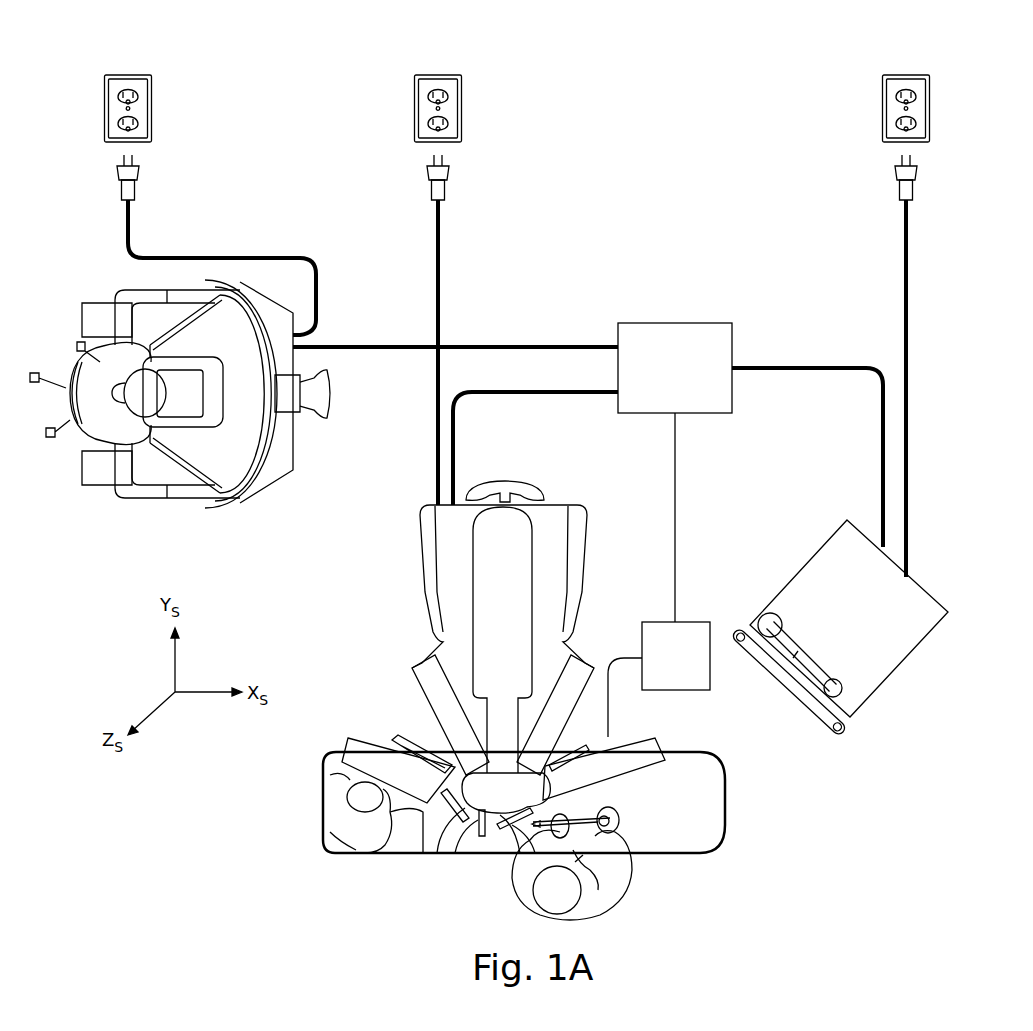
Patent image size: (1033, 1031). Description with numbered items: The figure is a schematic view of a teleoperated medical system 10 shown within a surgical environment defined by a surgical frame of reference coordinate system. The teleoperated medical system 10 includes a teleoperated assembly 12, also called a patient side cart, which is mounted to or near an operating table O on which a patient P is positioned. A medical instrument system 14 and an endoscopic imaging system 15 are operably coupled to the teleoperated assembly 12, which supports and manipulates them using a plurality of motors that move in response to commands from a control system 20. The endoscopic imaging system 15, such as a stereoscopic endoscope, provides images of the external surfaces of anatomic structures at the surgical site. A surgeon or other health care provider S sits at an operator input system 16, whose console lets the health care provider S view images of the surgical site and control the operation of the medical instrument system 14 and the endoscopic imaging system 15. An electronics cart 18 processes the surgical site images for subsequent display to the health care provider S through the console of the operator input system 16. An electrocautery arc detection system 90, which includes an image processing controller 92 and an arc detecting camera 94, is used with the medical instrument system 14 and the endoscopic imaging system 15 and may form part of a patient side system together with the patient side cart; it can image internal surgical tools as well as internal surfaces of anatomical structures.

The teleoperated medical system 10 is at (678, 58).
The teleoperated assembly 12 is at (420, 545).
The medical instrument system 14 is at (440, 855).
The endoscopic imaging system 15 is at (472, 850).
The operator input system 16 is at (268, 490).
The electronics cart 18 is at (897, 668).
The control system 20 is at (688, 384).
The electrocautery arc detection system 90 is at (712, 725).
The image processing controller 92 is at (690, 672).
The arc detecting camera 94 is at (588, 767).
The health care provider S is at (72, 360).
The patient P is at (348, 832).
The operating table O is at (665, 852).